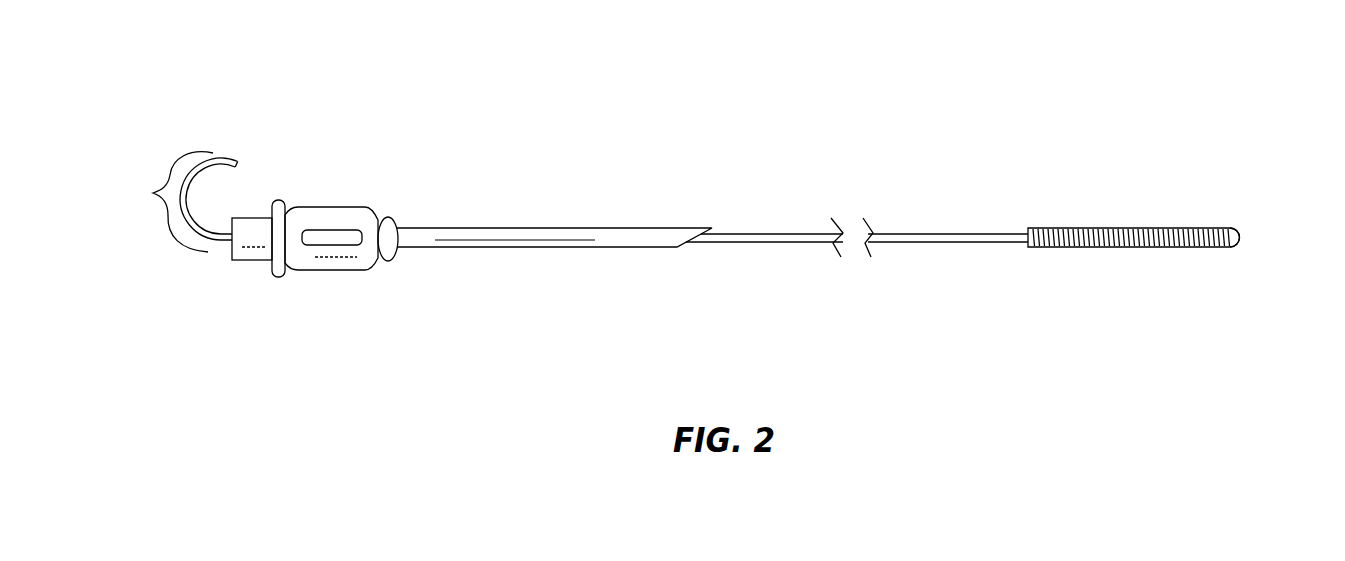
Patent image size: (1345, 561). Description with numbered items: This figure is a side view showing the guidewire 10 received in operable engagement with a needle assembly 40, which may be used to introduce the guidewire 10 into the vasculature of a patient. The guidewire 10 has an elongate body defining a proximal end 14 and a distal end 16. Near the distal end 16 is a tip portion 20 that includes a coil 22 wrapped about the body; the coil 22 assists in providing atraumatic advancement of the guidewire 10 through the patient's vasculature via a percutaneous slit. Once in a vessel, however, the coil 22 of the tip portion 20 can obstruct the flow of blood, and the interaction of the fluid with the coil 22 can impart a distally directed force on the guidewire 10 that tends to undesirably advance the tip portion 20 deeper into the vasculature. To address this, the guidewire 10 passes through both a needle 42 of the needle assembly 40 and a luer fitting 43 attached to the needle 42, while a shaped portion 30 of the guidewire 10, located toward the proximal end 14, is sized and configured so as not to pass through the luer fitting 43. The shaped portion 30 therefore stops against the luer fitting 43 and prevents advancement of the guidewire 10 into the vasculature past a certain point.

The guidewire 10 is at (963, 215).
The proximal end 14 is at (237, 163).
The distal end 16 is at (1242, 235).
The tip portion 20 is at (1134, 290).
The coil 22 is at (1110, 245).
The shaped portion 30 is at (169, 202).
The needle assembly 40 is at (431, 277).
The needle 42 is at (618, 230).
The luer fitting 43 is at (323, 217).